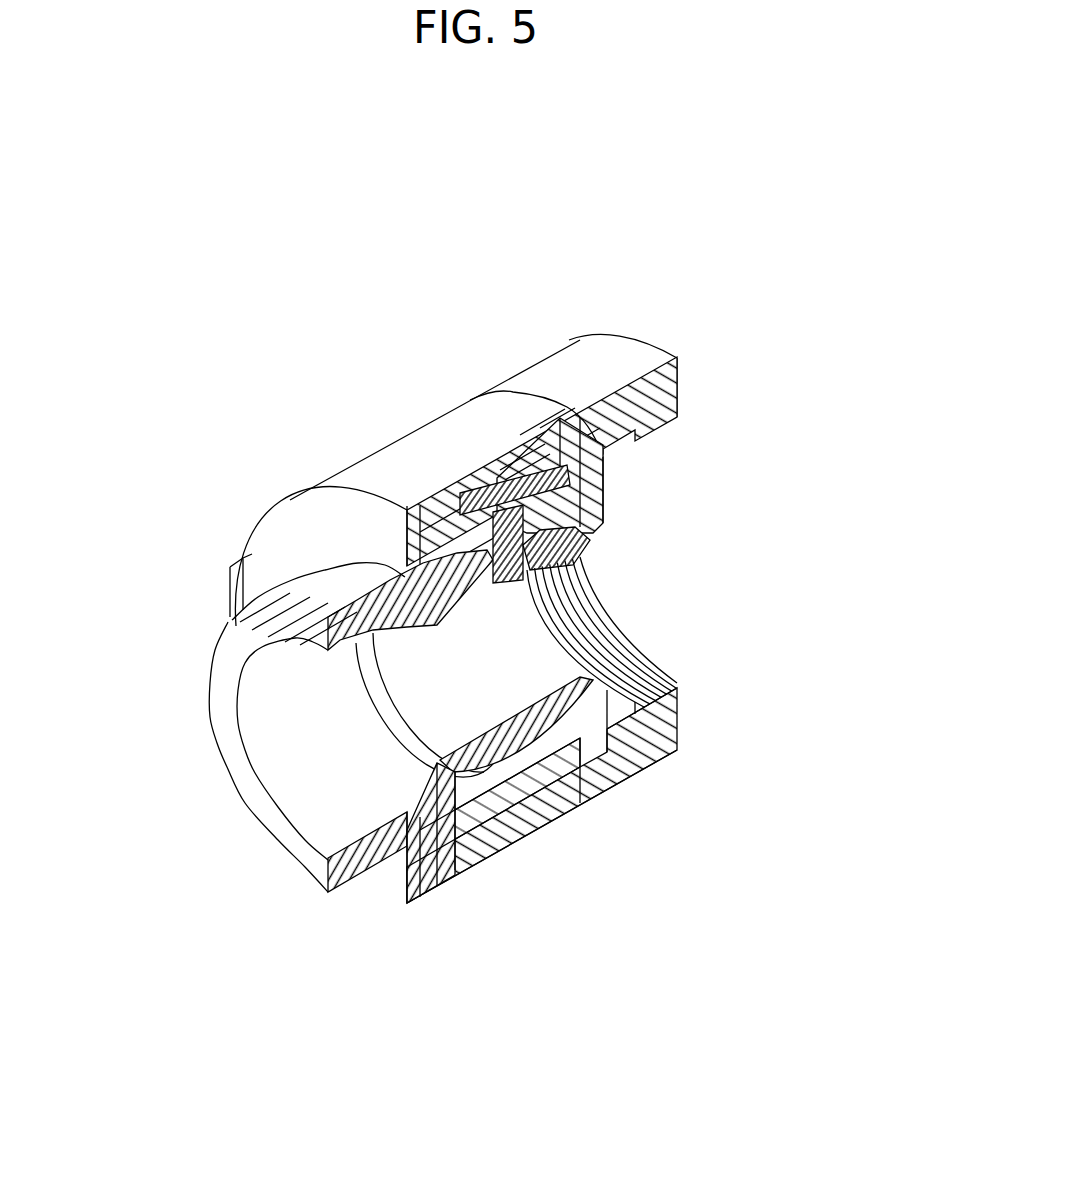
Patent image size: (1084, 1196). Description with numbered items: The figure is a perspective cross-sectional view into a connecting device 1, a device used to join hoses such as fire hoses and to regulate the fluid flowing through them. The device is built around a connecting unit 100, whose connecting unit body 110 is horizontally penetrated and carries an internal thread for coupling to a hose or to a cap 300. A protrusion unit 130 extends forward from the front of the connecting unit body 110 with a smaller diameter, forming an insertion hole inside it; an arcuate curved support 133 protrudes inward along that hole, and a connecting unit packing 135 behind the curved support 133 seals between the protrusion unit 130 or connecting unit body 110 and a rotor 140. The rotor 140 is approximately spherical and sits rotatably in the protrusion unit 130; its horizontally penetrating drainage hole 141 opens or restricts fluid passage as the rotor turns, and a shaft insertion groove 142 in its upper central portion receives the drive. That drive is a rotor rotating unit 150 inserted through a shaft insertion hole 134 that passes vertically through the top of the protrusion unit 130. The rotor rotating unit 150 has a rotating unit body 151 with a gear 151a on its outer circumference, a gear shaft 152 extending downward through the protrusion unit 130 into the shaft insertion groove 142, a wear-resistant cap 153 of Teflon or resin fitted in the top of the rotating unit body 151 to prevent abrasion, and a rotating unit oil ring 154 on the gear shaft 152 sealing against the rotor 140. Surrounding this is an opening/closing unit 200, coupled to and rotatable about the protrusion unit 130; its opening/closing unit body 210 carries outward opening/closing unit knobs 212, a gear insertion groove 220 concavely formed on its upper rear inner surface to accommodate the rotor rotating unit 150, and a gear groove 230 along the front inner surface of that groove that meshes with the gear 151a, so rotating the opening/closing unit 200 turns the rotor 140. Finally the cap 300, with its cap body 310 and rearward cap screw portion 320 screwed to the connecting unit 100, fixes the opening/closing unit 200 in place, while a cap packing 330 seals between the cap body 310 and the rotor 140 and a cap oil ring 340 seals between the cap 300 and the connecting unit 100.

The connecting device 1 is at (770, 179).
The connecting unit 100 is at (646, 332).
The connecting unit body 110 is at (662, 390).
The protrusion unit 130 is at (530, 767).
The curved support 133 is at (598, 730).
The shaft insertion hole 134 is at (477, 477).
The connecting unit packing 135 is at (628, 675).
The rotor 140 is at (580, 750).
The drainage hole 141 is at (537, 667).
The shaft insertion groove 142 is at (563, 573).
The rotor rotating unit 150 is at (592, 472).
The rotating unit body 151 is at (530, 432).
The gear 151a is at (560, 425).
The gear shaft 152 is at (577, 540).
The wear-resistant cap 153 is at (510, 450).
The rotating unit oil ring 154 is at (593, 502).
The opening/closing unit 200 is at (342, 461).
The opening/closing unit body 210 is at (530, 843).
The opening/closing unit knobs 212 is at (242, 558).
The gear insertion groove 220 is at (603, 430).
The gear groove 230 is at (477, 510).
The cap 300 is at (291, 884).
The cap body 310 is at (308, 517).
The cap screw portion 320 is at (468, 810).
The cap packing 330 is at (470, 795).
The cap oil ring 340 is at (437, 790).